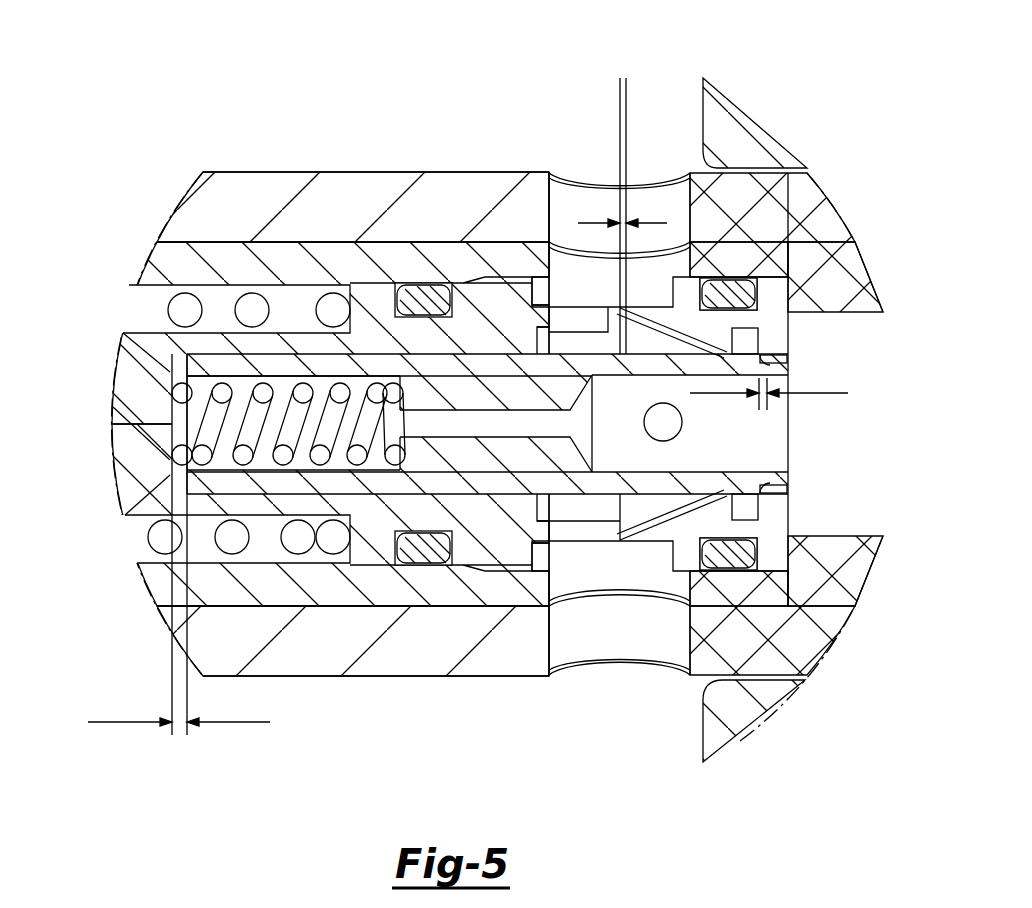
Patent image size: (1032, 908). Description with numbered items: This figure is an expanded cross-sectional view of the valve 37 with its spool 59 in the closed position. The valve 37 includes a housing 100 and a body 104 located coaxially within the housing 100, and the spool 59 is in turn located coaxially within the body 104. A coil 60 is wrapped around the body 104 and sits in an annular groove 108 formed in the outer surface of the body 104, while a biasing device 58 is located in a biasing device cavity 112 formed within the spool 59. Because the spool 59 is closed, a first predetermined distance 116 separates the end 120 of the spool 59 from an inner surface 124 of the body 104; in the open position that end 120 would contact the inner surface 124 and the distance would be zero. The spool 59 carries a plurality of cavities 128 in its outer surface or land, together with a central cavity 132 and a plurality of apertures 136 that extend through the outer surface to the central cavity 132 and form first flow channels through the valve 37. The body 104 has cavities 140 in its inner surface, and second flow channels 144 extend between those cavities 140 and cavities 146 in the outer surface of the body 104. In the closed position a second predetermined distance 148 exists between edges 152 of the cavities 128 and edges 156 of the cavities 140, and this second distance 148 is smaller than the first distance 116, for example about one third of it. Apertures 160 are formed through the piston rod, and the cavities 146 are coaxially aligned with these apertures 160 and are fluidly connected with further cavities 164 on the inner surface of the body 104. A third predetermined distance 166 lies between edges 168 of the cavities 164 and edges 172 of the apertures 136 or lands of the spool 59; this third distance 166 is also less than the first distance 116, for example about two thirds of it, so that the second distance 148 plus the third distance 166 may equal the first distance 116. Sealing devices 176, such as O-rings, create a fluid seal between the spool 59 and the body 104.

The valve 37 is at (480, 260).
The biasing device 58 is at (303, 393).
The spool 59 is at (462, 377).
The coil 60 is at (172, 310).
The housing 100 is at (200, 218).
The body 104 is at (147, 380).
The annular groove 108 is at (338, 310).
The biasing device cavity 112 is at (185, 420).
The first predetermined distance 116 is at (183, 735).
The end 120 is at (163, 362).
The inner surface 124 is at (170, 477).
The cavities 128 is at (787, 373).
The central cavity 132 is at (740, 462).
The apertures 136 is at (670, 370).
The cavities 140 is at (770, 277).
The second flow channels 144 is at (703, 293).
The cavities 146 is at (570, 547).
The second predetermined distance 148 is at (757, 412).
The edges 152 is at (782, 370).
The edges 156 is at (760, 333).
The apertures 160 is at (672, 640).
The cavities 164 is at (555, 335).
The third predetermined distance 166 is at (622, 77).
The edges 168 is at (578, 262).
The edges 172 is at (690, 423).
The sealing devices 176 is at (430, 297).